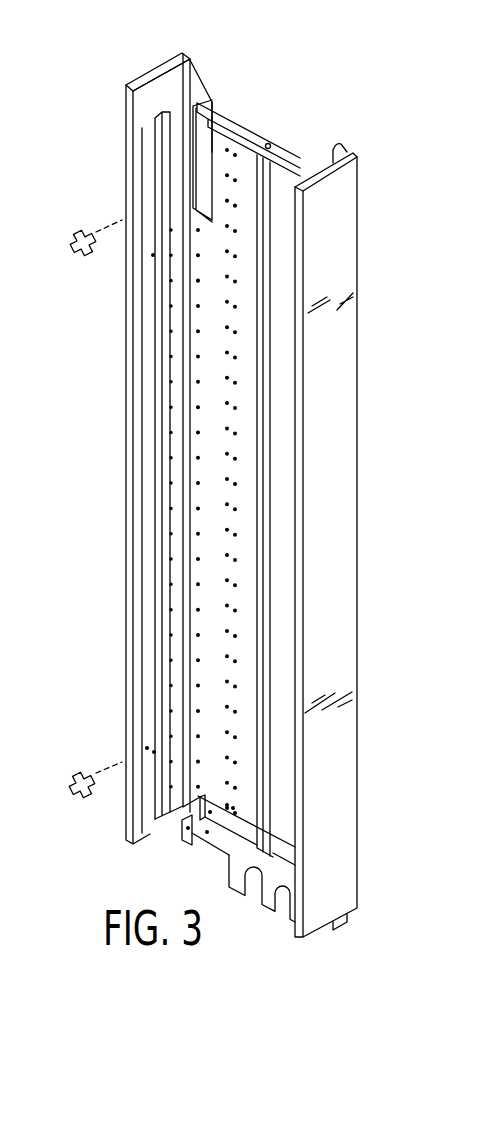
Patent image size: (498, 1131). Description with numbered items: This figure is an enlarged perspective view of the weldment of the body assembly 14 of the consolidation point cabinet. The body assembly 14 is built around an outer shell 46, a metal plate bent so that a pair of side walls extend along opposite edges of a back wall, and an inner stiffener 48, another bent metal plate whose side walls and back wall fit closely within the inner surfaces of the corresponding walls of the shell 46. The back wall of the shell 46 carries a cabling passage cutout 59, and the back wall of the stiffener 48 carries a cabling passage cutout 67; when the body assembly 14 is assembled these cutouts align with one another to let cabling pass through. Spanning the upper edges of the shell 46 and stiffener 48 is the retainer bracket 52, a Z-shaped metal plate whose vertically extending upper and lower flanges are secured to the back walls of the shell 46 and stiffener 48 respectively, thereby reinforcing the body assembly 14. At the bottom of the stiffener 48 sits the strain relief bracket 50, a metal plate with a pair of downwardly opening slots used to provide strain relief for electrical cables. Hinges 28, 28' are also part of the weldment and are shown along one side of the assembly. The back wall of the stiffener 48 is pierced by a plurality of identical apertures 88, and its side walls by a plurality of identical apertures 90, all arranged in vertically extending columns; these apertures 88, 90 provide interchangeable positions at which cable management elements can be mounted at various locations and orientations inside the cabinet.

The body assembly 14 is at (366, 132).
The hinge 28 is at (87, 220).
The hinge 28' is at (92, 757).
The outer shell 46 is at (358, 412).
The inner stiffener 48 is at (178, 112).
The strain relief bracket 50 is at (212, 845).
The retainer bracket 52 is at (262, 131).
The cabling passage cutout 59 is at (208, 102).
The cabling passage cutout 67 is at (213, 152).
The apertures 88 is at (232, 585).
The apertures 90 is at (169, 449).